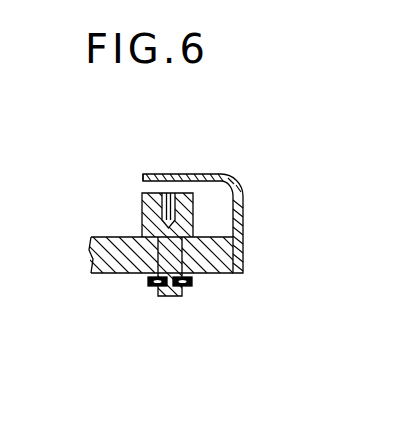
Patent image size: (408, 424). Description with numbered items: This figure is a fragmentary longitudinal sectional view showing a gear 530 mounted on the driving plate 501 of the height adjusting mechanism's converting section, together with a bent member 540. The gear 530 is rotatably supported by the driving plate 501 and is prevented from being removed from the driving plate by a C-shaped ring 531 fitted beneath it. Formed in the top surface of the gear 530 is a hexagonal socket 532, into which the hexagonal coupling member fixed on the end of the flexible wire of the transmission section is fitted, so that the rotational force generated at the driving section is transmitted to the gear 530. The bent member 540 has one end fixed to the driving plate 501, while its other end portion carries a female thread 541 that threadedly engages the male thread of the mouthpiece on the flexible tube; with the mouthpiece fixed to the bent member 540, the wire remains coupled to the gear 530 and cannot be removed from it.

The driving plate 501 is at (219, 273).
The gear 530 is at (194, 216).
The C-shaped ring 531 is at (150, 283).
The hexagonal socket 532 is at (152, 215).
The bent member 540 is at (168, 174).
The female thread 541 is at (143, 177).